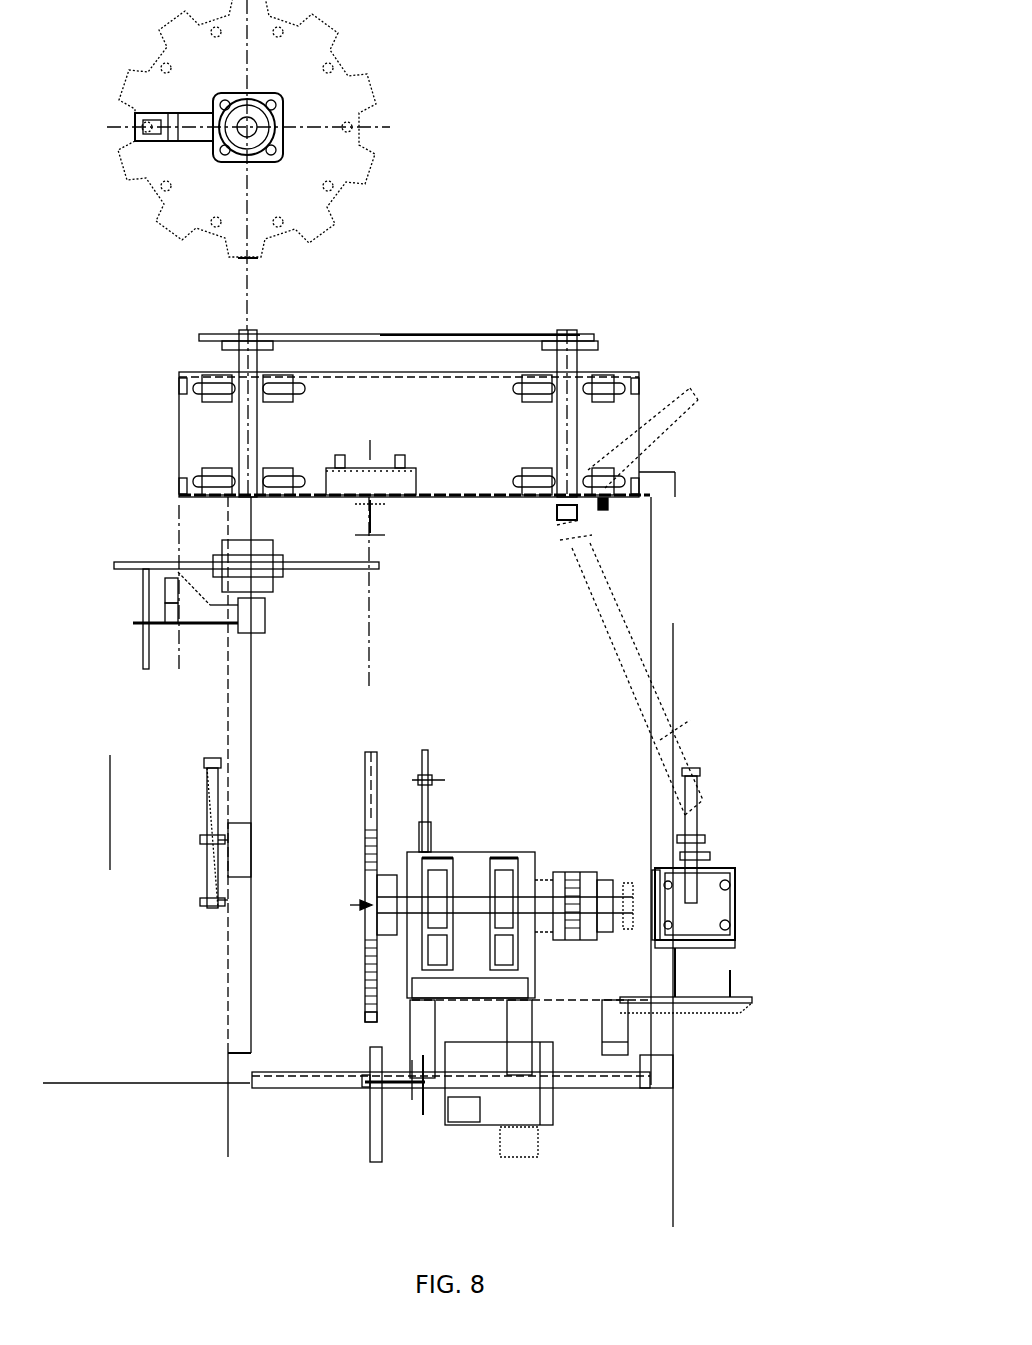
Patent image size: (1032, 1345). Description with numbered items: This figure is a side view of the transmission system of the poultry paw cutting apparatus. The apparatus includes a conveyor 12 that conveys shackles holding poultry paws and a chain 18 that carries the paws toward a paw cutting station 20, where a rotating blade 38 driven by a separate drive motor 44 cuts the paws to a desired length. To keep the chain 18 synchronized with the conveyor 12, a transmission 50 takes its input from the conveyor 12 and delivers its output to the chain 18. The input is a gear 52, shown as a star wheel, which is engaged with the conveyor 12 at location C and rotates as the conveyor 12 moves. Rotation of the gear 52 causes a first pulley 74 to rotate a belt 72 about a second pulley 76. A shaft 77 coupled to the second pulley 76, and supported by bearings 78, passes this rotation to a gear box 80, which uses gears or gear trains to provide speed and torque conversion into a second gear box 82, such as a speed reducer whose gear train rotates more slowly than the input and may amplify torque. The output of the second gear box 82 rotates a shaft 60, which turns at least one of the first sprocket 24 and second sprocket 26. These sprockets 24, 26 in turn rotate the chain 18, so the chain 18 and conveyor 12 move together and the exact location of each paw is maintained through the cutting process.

The transmission 50 is at (672, 50).
The gear 52 is at (325, 157).
The belt 72 is at (496, 335).
The first pulley 74 is at (270, 333).
The second pulley 76 is at (594, 335).
The bearings 78 is at (598, 478).
The shaft 77 is at (608, 622).
The conveyor 12 is at (396, 480).
The chain 18 is at (322, 883).
The location C is at (392, 582).
The second sprocket 26 is at (365, 787).
The first sprocket 24 is at (365, 932).
The rotating blade 38 is at (365, 1033).
The shaft 60 is at (471, 903).
The second gear box 82 is at (568, 877).
The gear box 80 is at (700, 880).
The paw cutting station 20 is at (384, 1170).
The drive motor 44 is at (520, 1119).